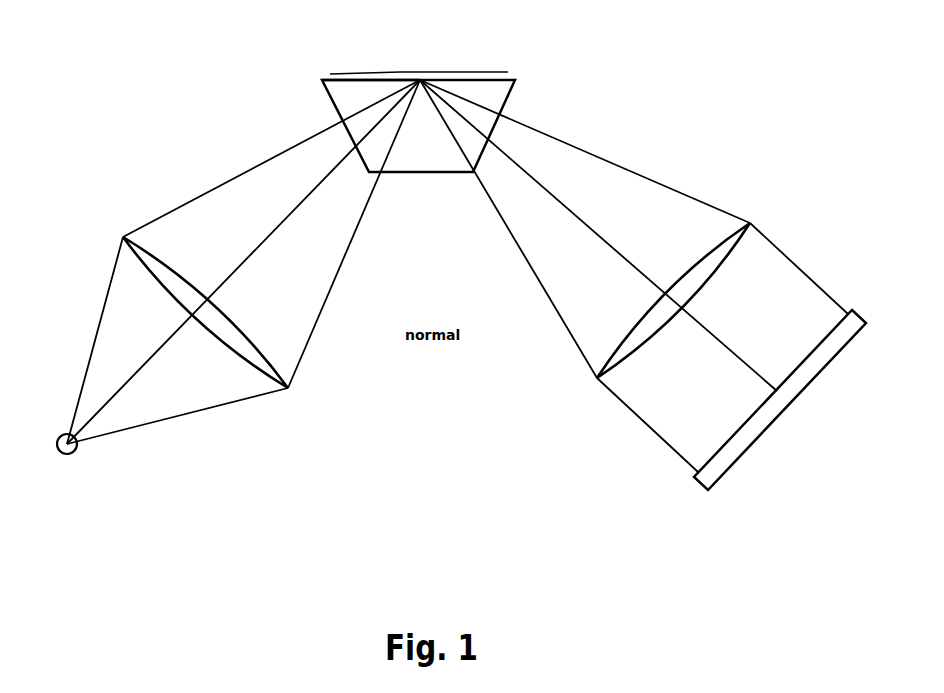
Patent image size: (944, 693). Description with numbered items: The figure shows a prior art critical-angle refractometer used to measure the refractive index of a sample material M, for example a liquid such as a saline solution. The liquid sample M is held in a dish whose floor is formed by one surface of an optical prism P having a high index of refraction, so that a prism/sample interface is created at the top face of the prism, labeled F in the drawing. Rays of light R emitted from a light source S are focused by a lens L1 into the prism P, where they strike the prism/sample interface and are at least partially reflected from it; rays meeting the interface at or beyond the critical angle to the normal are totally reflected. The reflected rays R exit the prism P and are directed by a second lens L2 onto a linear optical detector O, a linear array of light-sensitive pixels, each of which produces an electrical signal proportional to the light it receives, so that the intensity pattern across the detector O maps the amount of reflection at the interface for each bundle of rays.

The light source S is at (57, 444).
The rays of light R is at (82, 372).
The lens L1 is at (123, 236).
The lens L2 is at (750, 223).
The optical prism P is at (513, 97).
The prism face F is at (333, 80).
The sample material M is at (382, 72).
The linear optical detector O is at (702, 484).